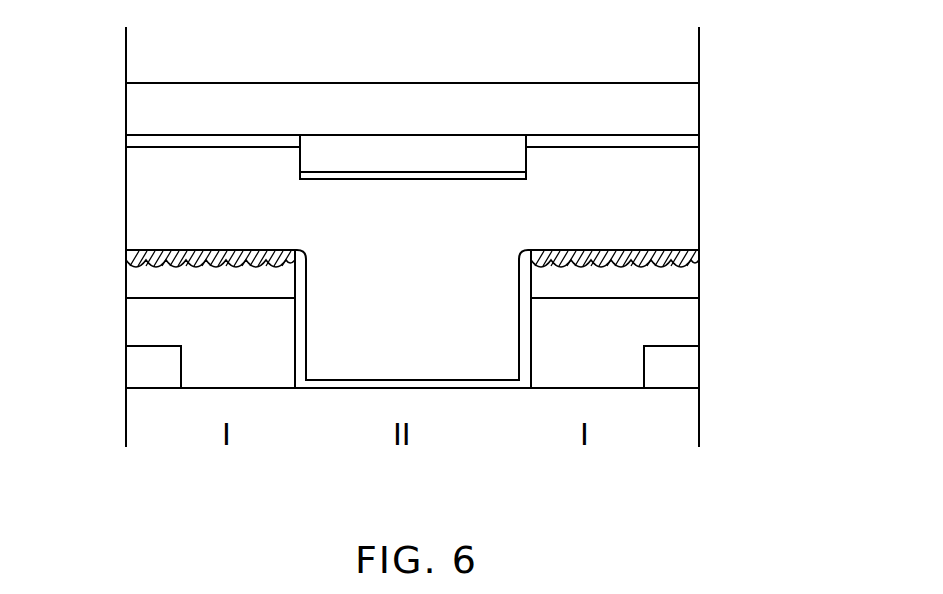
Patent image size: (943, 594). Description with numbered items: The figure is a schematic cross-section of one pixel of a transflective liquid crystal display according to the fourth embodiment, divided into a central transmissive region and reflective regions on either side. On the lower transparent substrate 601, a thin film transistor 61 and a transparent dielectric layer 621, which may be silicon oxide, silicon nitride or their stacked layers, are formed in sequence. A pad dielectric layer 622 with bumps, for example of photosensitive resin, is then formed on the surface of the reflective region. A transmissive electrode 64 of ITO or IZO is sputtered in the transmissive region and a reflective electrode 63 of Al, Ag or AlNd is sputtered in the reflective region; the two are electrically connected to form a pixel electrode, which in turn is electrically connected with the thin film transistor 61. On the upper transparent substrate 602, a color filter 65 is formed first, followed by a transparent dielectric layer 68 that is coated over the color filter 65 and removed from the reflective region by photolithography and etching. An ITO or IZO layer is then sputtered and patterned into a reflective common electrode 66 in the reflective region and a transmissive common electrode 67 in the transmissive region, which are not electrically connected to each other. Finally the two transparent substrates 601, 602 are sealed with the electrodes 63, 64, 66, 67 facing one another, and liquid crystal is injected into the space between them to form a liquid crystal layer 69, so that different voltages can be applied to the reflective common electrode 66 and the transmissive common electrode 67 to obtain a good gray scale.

The transparent substrate 601 is at (412, 417).
The transparent substrate 602 is at (412, 64).
The thin film transistor 61 is at (145, 370).
The transparent dielectric layer 621 is at (680, 322).
The pad dielectric layer 622 is at (682, 284).
The reflective electrode 63 is at (126, 252).
The transmissive electrode 64 is at (524, 298).
The color filter 65 is at (680, 110).
The reflective common electrode 66 is at (165, 141).
The transmissive common electrode 67 is at (403, 176).
The transparent dielectric layer 68 is at (483, 153).
The liquid crystal layer 69 is at (678, 203).